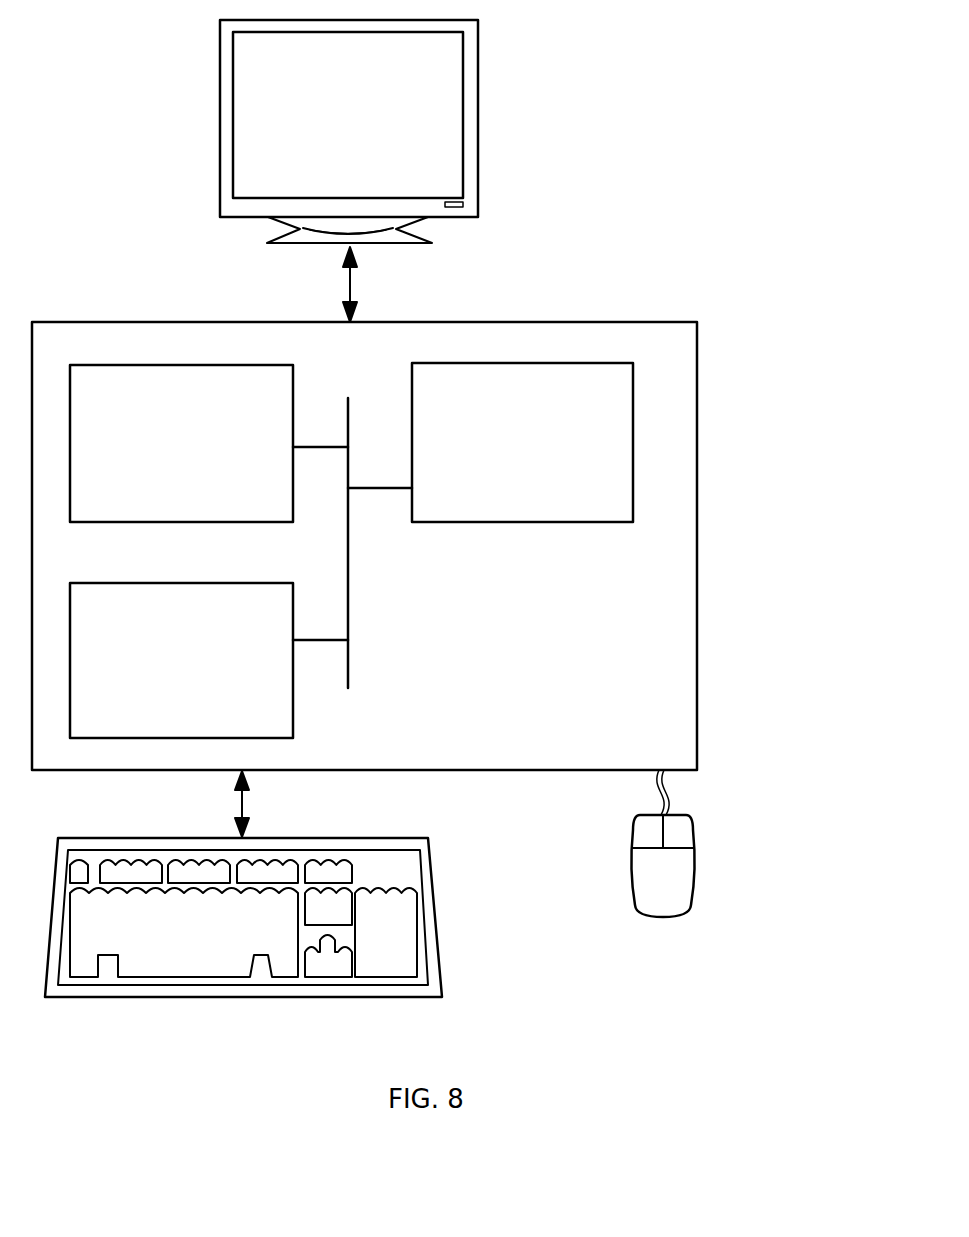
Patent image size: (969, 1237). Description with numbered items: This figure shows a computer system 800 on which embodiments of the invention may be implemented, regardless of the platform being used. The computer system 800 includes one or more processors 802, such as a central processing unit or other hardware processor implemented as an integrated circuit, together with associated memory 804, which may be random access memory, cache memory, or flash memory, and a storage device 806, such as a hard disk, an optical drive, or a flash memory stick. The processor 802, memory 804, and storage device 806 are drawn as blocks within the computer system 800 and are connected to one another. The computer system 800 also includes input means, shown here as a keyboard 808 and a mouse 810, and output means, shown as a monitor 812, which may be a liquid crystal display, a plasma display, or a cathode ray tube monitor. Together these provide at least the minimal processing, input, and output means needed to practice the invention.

The computer system 800 is at (752, 327).
The processor 802 is at (501, 441).
The memory 804 is at (160, 442).
The storage device 806 is at (160, 657).
The keyboard 808 is at (161, 929).
The mouse 810 is at (700, 926).
The monitor 812 is at (328, 127).